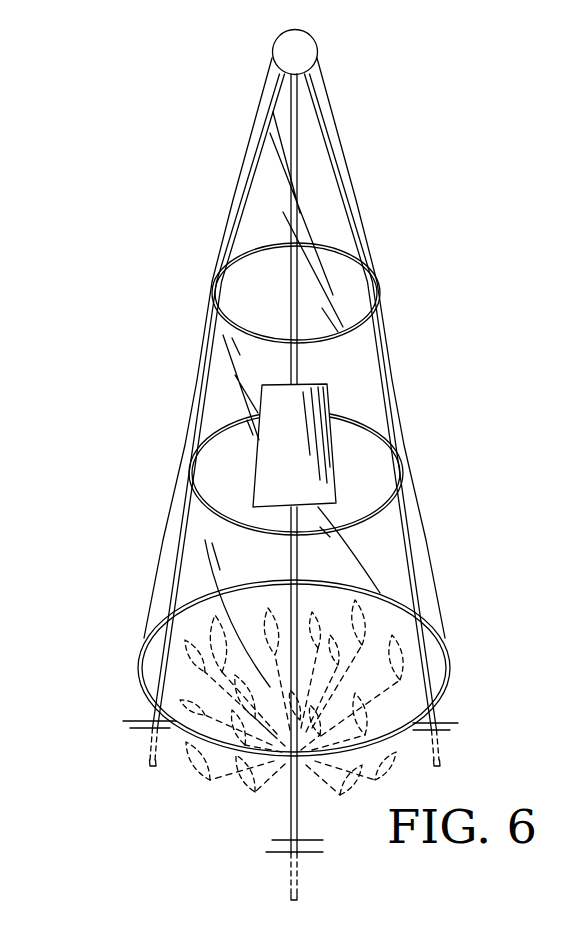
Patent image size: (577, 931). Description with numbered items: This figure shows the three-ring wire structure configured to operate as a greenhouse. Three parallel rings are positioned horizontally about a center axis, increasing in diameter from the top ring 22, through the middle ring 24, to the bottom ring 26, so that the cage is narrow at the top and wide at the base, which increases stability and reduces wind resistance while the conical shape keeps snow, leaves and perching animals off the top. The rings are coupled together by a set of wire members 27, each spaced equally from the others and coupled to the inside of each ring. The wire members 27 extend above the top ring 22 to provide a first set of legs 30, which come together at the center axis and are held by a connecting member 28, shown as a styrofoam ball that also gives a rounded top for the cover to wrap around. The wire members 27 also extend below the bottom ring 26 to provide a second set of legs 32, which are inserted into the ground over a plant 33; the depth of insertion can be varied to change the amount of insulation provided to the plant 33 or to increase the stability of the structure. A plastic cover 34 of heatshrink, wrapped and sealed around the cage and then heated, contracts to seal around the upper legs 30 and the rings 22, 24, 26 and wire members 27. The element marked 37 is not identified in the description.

The top ring 22 is at (212, 287).
The middle ring 24 is at (404, 467).
The bottom ring 26 is at (300, 442).
The wire members 27 is at (290, 367).
The connecting member 28 is at (307, 50).
The first set of legs 30 is at (252, 146).
The second set of legs 32 is at (150, 748).
The plant 33 is at (194, 824).
The plastic cover 34 is at (353, 345).
The side rod 37 is at (389, 397).